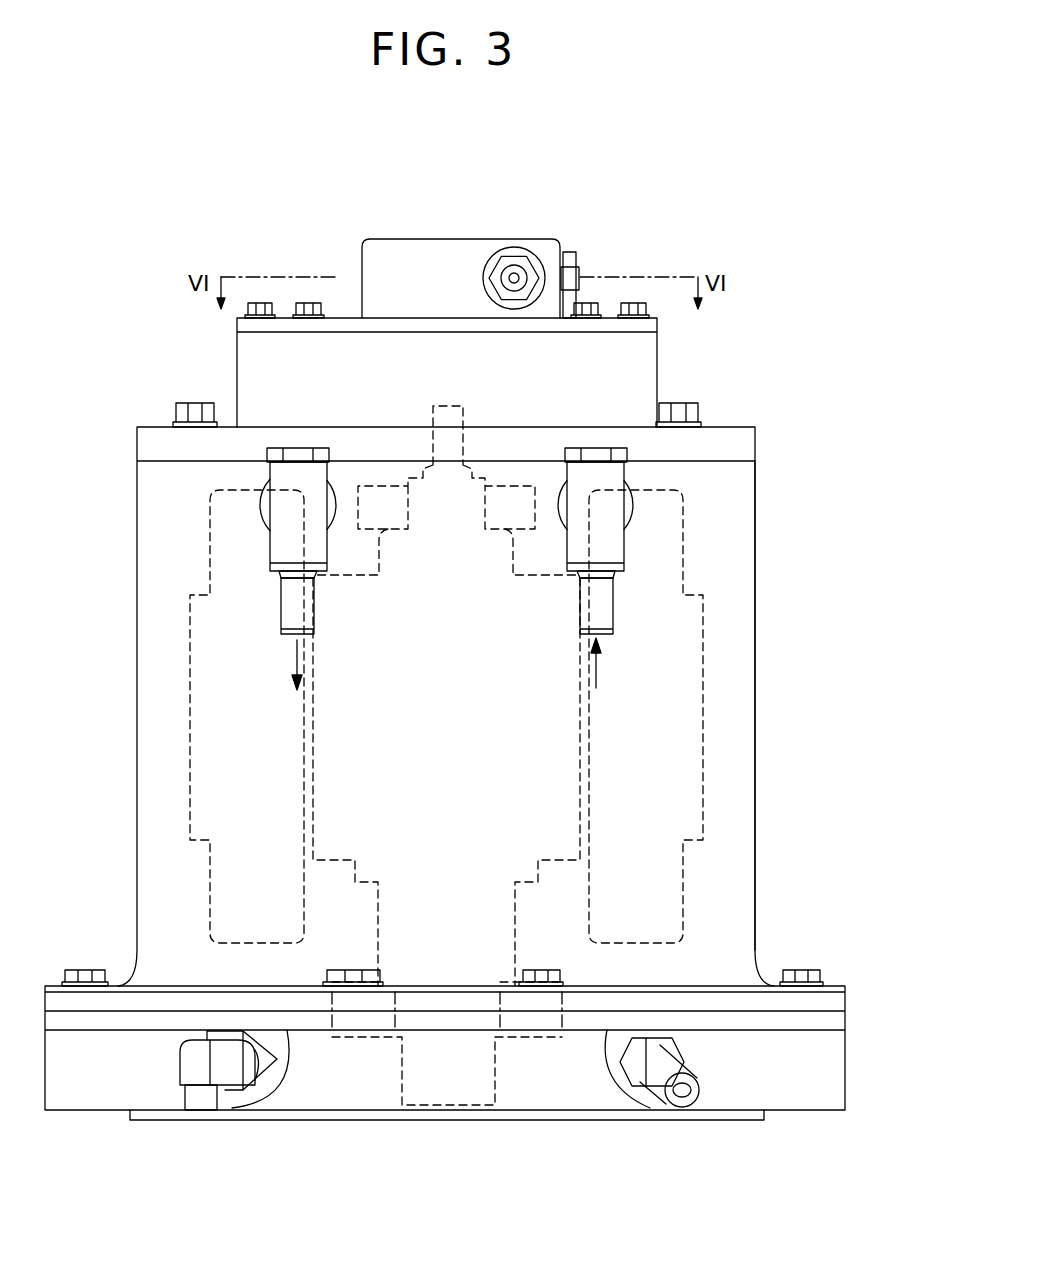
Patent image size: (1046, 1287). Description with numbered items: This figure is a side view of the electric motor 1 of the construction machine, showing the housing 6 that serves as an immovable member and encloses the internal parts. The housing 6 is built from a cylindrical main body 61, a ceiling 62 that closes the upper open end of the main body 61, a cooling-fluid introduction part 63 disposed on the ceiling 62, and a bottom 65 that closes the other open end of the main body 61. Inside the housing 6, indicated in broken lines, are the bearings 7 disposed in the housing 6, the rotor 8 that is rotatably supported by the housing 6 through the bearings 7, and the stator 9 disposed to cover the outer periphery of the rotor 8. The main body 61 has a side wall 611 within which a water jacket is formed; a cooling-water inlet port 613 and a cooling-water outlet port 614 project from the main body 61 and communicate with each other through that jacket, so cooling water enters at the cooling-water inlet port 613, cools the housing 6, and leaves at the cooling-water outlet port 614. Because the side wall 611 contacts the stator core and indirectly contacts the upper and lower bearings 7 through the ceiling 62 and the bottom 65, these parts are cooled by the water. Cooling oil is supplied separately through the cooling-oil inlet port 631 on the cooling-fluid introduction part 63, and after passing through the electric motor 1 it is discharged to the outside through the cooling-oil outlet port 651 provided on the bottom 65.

The electric motor 1 is at (651, 166).
The housing 6 is at (750, 400).
The main body 61 is at (475, 694).
The side wall 611 is at (755, 695).
The ceiling 62 is at (657, 353).
The cooling-fluid introduction part 63 is at (464, 239).
The cooling-oil inlet port 631 is at (515, 277).
The cooling-water inlet port 613 is at (613, 473).
The cooling-water outlet port 614 is at (277, 472).
The bearings 7 is at (517, 486).
The rotor 8 is at (520, 913).
The stator 9 is at (683, 893).
The bottom 65 is at (805, 1100).
The cooling-oil outlet port 651 is at (192, 1065).